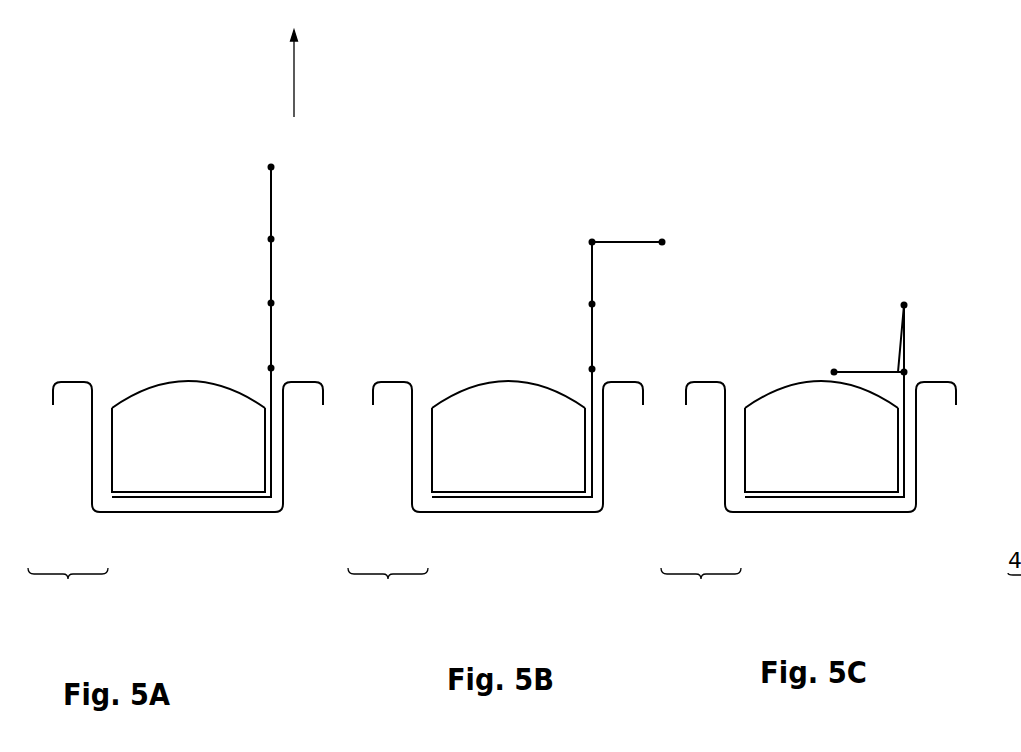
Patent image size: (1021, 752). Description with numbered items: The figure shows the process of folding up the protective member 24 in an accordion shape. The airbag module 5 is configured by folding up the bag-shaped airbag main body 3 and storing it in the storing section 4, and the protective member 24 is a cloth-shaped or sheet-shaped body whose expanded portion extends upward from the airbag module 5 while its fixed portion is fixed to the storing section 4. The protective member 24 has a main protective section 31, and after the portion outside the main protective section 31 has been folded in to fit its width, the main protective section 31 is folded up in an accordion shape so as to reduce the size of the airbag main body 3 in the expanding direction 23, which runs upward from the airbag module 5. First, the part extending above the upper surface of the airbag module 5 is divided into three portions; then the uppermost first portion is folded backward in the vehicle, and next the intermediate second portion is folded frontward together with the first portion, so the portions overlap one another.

In FIG. 5A, the airbag main body 3 is at (112, 458).
In FIG. 5B, the airbag main body 3 is at (496, 477).
In FIG. 5C, the airbag main body 3 is at (809, 477).
In FIG. 5A, the storing section 4 is at (92, 432).
In FIG. 5B, the storing section 4 is at (499, 477).
In FIG. 5C, the storing section 4 is at (812, 477).
In FIG. 5A, the airbag module 5 is at (68, 587).
In FIG. 5B, the airbag module 5 is at (388, 587).
In FIG. 5C, the airbag module 5 is at (701, 587).
In FIG. 5A, the expanding direction 23 is at (294, 78).
In FIG. 5A, the protective member 24 is at (316, 297).
In FIG. 5B, the protective member 24 is at (624, 327).
In FIG. 5C, the protective member 24 is at (931, 339).
In FIG. 5A, the main protective section 31 is at (286, 250).
In FIG. 5B, the main protective section 31 is at (623, 222).
In FIG. 5C, the main protective section 31 is at (863, 295).